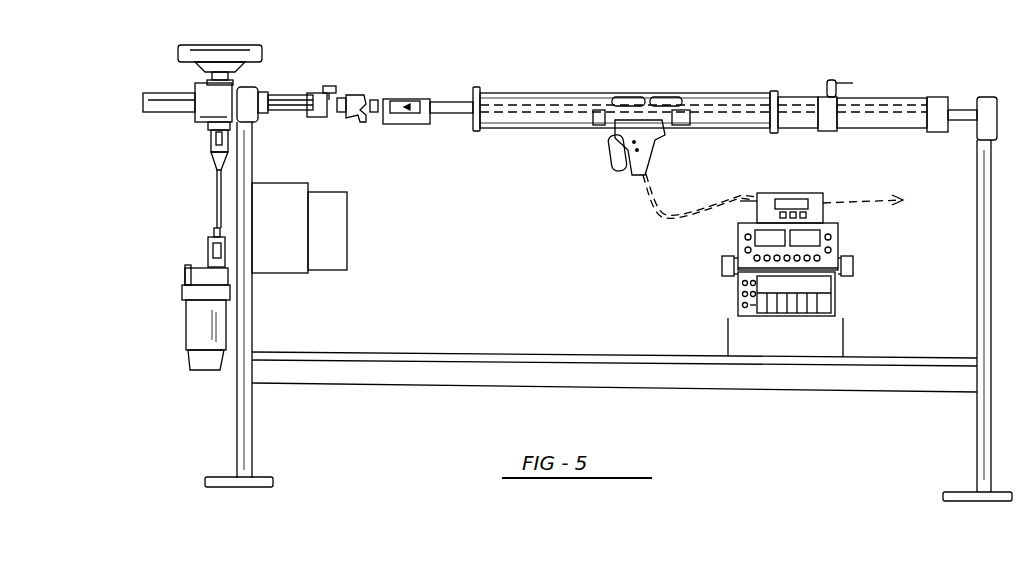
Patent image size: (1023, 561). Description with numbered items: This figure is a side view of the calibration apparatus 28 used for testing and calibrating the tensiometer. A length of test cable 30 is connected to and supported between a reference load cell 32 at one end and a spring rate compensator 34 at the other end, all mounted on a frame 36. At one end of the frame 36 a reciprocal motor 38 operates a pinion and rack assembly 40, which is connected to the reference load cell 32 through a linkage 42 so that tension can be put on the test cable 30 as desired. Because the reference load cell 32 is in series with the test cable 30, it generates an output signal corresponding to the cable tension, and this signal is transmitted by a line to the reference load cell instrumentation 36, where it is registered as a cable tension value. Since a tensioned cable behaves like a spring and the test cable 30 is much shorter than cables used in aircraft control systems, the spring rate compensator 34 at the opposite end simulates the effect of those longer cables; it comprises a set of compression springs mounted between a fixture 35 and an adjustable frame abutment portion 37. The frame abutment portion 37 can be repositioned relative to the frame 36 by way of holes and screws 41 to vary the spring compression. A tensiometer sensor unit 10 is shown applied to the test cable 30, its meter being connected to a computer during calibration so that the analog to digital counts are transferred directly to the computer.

The portable measuring instrument 10 is at (643, 137).
The calibration apparatus 28 is at (150, 172).
The test cable 30 is at (453, 100).
The reference load cell 32 is at (365, 100).
The spring rate compensator 34 is at (897, 105).
The fixture 35 is at (938, 97).
The frame 36 is at (248, 423).
The frame abutment portion 37 is at (825, 98).
The reciprocal motor 38 is at (200, 328).
The pinion and rack assembly 40 is at (240, 80).
The screws 41 is at (838, 82).
The linkage 42 is at (315, 93).